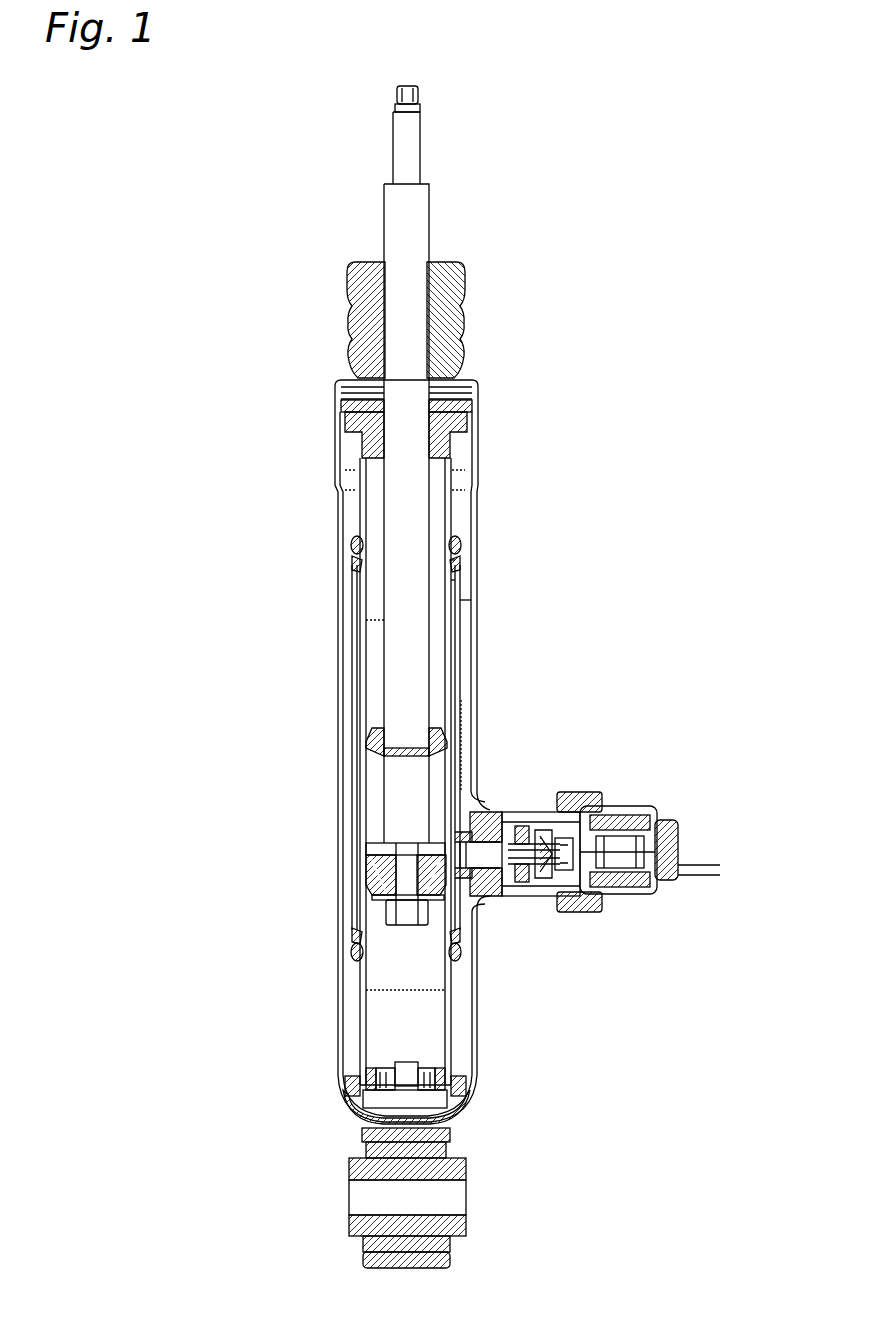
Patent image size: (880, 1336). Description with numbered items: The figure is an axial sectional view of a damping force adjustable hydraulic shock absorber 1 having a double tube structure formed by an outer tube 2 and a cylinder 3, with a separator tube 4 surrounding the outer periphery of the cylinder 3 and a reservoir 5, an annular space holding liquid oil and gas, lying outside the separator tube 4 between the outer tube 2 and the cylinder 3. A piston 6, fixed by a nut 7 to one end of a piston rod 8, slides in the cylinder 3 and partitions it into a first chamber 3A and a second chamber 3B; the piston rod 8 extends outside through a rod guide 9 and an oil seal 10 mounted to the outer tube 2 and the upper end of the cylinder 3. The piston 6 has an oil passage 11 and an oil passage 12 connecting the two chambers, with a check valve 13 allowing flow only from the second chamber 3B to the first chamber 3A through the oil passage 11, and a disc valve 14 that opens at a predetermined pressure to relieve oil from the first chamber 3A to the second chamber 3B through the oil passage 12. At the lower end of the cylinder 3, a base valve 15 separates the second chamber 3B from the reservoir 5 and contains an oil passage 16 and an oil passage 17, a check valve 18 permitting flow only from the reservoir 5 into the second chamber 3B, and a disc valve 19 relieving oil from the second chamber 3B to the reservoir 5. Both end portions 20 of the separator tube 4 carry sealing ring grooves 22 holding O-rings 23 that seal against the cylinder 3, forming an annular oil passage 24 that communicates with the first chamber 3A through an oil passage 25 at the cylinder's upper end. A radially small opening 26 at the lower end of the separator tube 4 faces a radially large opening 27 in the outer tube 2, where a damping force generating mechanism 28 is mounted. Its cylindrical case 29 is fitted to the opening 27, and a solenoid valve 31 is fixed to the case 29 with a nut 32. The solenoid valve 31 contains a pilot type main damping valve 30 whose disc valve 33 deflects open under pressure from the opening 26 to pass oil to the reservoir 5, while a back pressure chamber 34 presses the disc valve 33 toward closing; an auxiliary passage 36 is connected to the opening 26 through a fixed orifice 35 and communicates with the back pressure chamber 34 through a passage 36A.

The damping force adjustable hydraulic shock absorber 1 is at (548, 240).
The outer tube 2 is at (468, 536).
The cylinder 3 is at (470, 506).
The first chamber 3A is at (372, 619).
The second chamber 3B is at (380, 991).
The separator tube 4 is at (458, 561).
The reservoir 5 is at (350, 511).
The piston 6 is at (370, 868).
The nut 7 is at (386, 911).
The piston rod 8 is at (400, 341).
The rod guide 9 is at (462, 445).
The oil seal 10 is at (455, 395).
The oil passage 11 is at (372, 896).
The oil passage 12 is at (463, 693).
The check valve 13 is at (366, 848).
The disc valve 14 is at (470, 965).
The base valve 15 is at (345, 1091).
The oil passage 16 is at (362, 1113).
The oil passage 17 is at (445, 1069).
The check valve 18 is at (364, 1071).
The disc valve 19 is at (470, 1111).
The end portion 20 is at (354, 565).
The sealing ring groove 22 is at (478, 549).
The O-ring 23 is at (352, 548).
The annular oil passage 24 is at (462, 601).
The oil passage 25 is at (462, 581).
The opening 26 is at (480, 906).
The opening 27 is at (505, 808).
The damping force generating mechanism 28 is at (662, 800).
The case 29 is at (532, 808).
The main damping valve 30 is at (542, 808).
The solenoid valve 31 is at (632, 798).
The nut 32 is at (582, 913).
The disc valve 33 is at (522, 808).
The back pressure chamber 34 is at (556, 808).
The fixed orifice 35 is at (480, 790).
The auxiliary passage 36 is at (545, 906).
The passage 36A is at (668, 836).